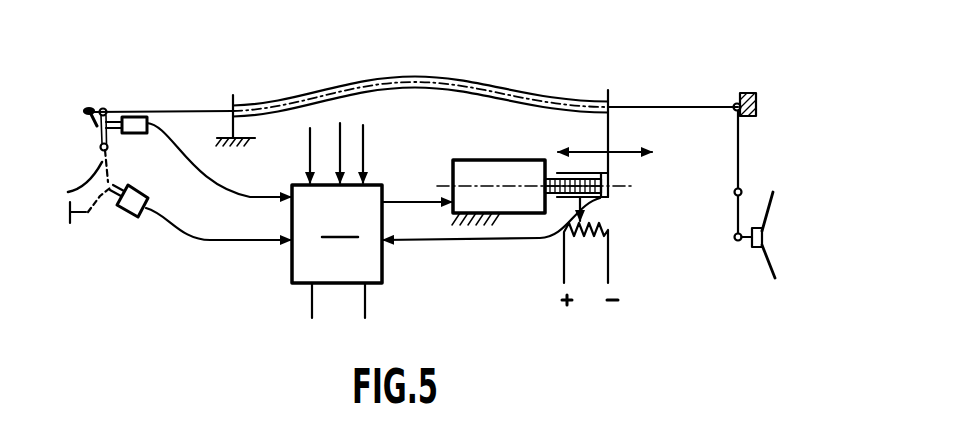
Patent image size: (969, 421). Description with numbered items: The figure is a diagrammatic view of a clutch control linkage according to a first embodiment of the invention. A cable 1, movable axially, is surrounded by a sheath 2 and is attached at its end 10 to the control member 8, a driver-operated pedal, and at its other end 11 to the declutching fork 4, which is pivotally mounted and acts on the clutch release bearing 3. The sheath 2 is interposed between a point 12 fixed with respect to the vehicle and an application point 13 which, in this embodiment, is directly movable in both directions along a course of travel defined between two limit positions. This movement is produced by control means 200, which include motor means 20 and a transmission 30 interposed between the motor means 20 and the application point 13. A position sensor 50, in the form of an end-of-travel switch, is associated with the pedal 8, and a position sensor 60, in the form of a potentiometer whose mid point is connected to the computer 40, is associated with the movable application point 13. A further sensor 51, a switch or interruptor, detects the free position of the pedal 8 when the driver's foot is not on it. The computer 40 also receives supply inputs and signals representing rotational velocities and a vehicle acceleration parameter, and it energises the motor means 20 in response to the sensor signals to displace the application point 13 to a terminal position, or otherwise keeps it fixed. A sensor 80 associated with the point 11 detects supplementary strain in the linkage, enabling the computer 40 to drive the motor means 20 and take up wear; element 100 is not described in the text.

The cable 1 is at (673, 100).
The sheath 2 is at (328, 92).
The clutch release bearing 3 is at (753, 249).
The declutching fork 4 is at (748, 153).
The control member 8 is at (82, 160).
The cable end 10 is at (104, 108).
The cable end 11 is at (742, 91).
The fixed point 12 is at (233, 95).
The application point 13 is at (605, 92).
The motor means 20 is at (472, 158).
The transmission 30 is at (628, 184).
The computer 40 is at (337, 251).
The position sensor 50 is at (124, 217).
The sensor 51 is at (134, 128).
The position sensor 60 is at (557, 240).
The supplementary strain detecting sensor 80 is at (761, 100).
The input signal 100 is at (306, 162).
The control means 200 is at (534, 156).